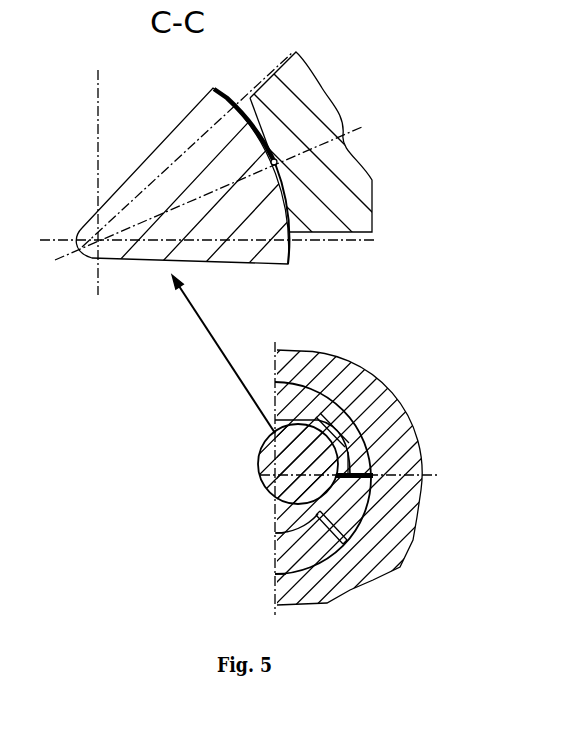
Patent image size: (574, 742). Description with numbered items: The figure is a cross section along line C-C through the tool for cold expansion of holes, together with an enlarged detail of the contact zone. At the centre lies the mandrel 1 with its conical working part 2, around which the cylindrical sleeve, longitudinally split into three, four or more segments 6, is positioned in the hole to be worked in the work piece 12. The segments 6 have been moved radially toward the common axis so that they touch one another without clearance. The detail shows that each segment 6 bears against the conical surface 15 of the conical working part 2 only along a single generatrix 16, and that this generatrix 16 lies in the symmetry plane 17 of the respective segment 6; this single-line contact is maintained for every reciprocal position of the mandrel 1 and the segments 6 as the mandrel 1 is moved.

The mandrel 1 is at (275, 512).
The conical working part 2 is at (172, 168).
The segment 6 is at (337, 202).
The work piece 12 is at (387, 407).
The conical surface 15 is at (222, 92).
The generatrix 16 is at (276, 158).
The symmetry plane 17 is at (355, 127).